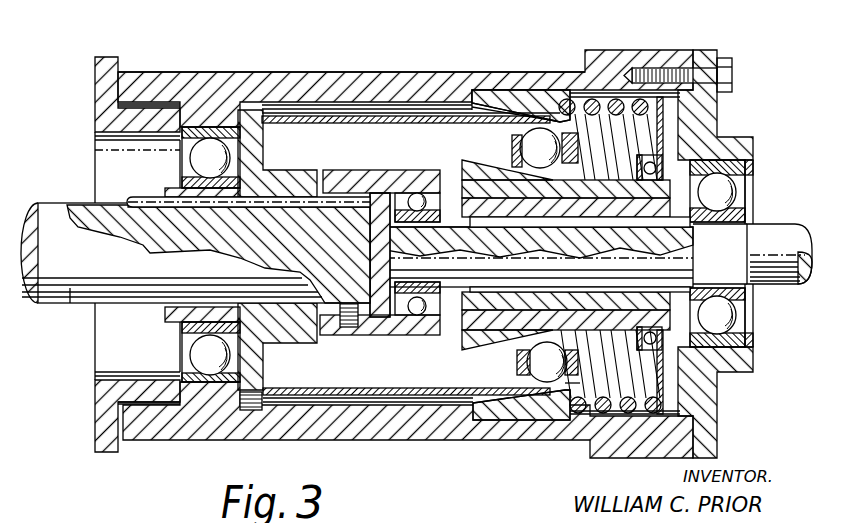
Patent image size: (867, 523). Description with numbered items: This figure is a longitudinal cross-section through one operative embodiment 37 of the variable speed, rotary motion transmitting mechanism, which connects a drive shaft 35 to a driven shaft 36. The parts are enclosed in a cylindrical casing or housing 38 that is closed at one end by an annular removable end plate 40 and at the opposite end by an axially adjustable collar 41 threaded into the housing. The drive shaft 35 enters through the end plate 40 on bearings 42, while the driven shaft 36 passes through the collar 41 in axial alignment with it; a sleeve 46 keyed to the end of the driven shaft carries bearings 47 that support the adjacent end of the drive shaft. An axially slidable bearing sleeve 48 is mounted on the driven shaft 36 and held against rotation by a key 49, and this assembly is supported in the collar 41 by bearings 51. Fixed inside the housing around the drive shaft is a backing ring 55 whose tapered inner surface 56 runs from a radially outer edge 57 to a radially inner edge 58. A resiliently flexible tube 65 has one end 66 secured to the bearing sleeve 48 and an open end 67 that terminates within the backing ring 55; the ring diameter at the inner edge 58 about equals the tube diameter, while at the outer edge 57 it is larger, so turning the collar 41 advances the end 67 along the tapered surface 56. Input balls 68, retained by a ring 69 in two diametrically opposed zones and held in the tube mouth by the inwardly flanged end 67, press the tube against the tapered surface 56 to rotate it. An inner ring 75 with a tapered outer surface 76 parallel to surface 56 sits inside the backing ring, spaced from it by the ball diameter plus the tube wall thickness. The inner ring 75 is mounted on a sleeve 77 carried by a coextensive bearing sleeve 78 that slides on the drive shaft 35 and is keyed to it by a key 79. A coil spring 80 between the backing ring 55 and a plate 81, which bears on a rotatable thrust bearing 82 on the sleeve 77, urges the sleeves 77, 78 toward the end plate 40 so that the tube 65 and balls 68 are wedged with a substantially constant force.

The drive shaft 35 is at (782, 242).
The driven shaft 36 is at (72, 302).
The operative embodiment of the variable speed rotary motion transmitting mechanism 37 is at (276, 64).
The cylindrical casing or housing 38 is at (348, 74).
The annular removable end plate 40 is at (712, 110).
The axially adjustable collar 41 is at (100, 420).
The bearings 42 is at (747, 180).
The sleeve 46 is at (384, 334).
The bearings 47 is at (424, 186).
The axially slidable bearing sleeve 48 is at (168, 318).
The key 49 is at (134, 203).
The bearings 51 is at (190, 355).
The backing ring 55 is at (520, 410).
The tapered inner surface 56 is at (492, 110).
The radially outer edge 57 is at (472, 100).
The radially inner edge 58 is at (552, 114).
The resiliently flexible tube 65 is at (300, 127).
The end of tube 66 is at (279, 342).
The open end of tube 67 is at (576, 385).
The input balls 68 is at (547, 362).
The ring 69 is at (520, 150).
The inner ring 75 is at (462, 172).
The tapered outer surface 76 is at (472, 344).
The sleeve 77 is at (464, 333).
The bearing sleeve 78 is at (462, 300).
The key 79 is at (608, 245).
The coil spring 80 is at (598, 96).
The plate 81 is at (678, 70).
The rotatable thrust bearing 82 is at (720, 373).